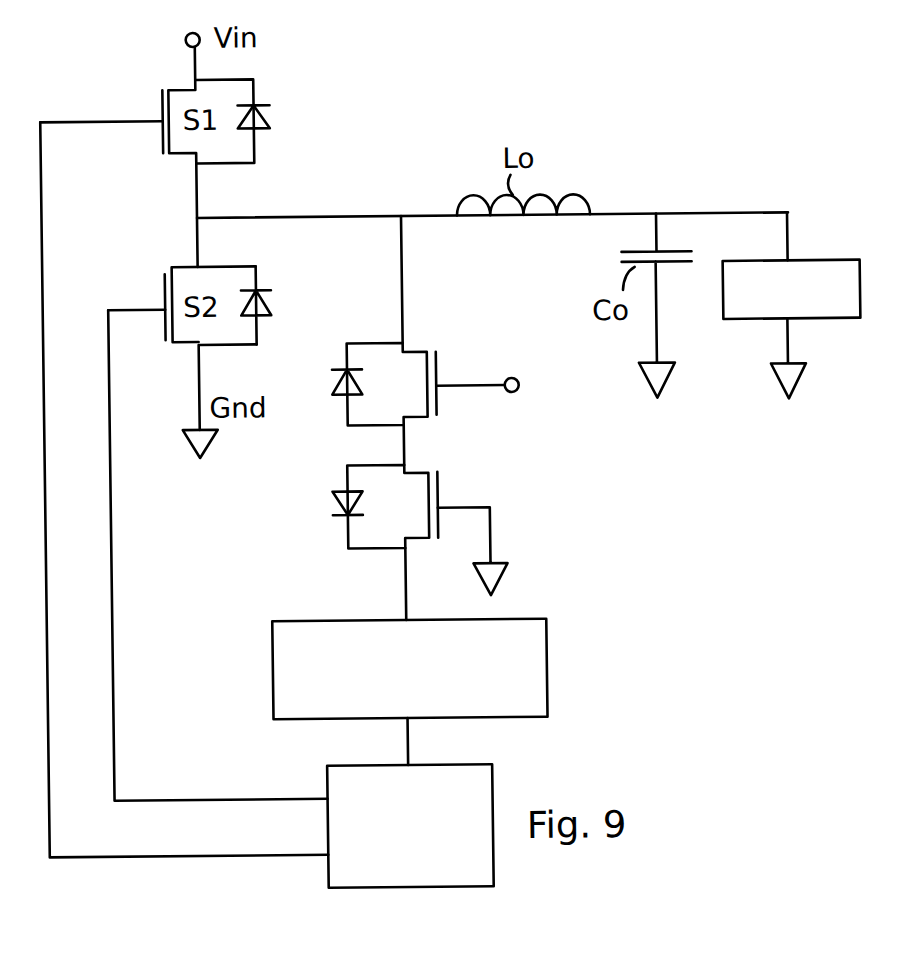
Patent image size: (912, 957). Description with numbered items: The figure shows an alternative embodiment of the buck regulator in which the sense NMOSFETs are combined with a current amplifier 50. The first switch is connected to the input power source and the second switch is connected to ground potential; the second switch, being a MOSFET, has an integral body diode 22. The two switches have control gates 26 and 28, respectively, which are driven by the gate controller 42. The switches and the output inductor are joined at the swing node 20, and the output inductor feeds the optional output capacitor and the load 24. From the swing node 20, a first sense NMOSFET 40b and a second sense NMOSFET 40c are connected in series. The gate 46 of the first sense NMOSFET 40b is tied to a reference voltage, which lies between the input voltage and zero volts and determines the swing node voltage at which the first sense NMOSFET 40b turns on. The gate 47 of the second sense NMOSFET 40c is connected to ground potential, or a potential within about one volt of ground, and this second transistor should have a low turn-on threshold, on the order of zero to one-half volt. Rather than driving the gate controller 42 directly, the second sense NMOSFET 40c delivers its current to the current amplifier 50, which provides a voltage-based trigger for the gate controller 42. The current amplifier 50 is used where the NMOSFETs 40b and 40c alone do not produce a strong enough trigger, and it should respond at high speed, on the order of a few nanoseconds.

The swing node 20 is at (303, 217).
The integral body diode 22 is at (262, 292).
The load 24 is at (791, 305).
The control gate 26 is at (126, 119).
The control gate 28 is at (139, 308).
The first sense NMOSFET 40b is at (384, 384).
The second sense NMOSFET 40c is at (385, 507).
The gate controller 42 is at (410, 826).
The gate 46 is at (465, 386).
The gate 47 is at (486, 518).
The current amplifier 50 is at (409, 669).